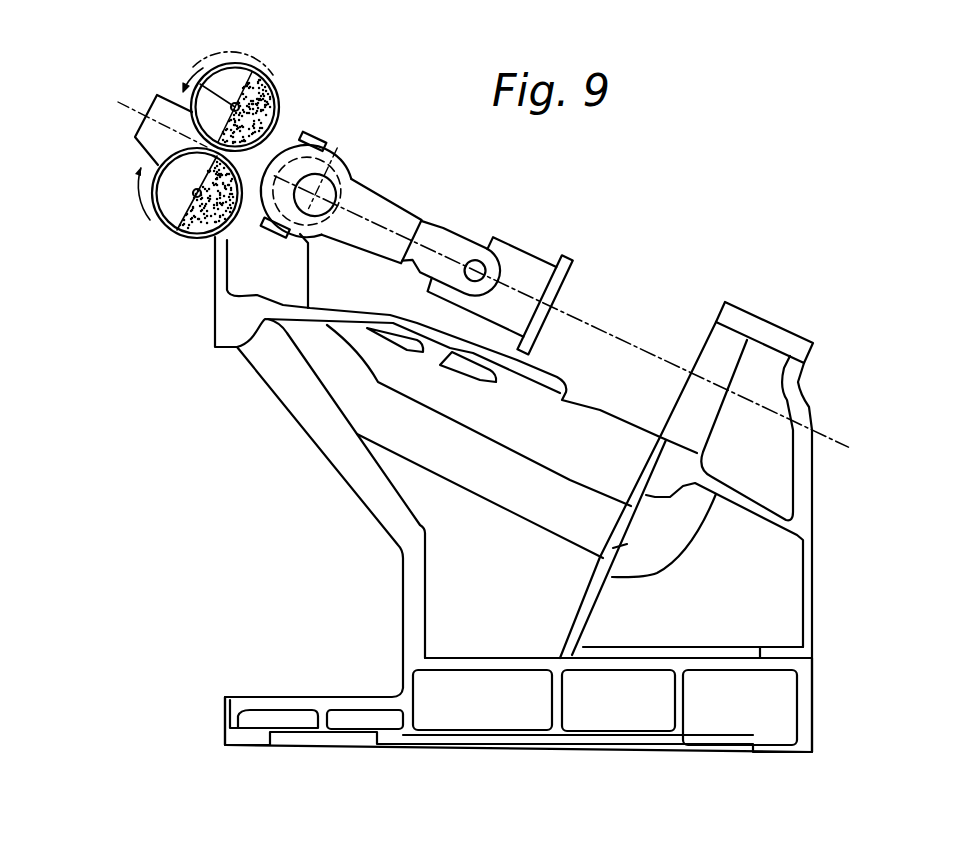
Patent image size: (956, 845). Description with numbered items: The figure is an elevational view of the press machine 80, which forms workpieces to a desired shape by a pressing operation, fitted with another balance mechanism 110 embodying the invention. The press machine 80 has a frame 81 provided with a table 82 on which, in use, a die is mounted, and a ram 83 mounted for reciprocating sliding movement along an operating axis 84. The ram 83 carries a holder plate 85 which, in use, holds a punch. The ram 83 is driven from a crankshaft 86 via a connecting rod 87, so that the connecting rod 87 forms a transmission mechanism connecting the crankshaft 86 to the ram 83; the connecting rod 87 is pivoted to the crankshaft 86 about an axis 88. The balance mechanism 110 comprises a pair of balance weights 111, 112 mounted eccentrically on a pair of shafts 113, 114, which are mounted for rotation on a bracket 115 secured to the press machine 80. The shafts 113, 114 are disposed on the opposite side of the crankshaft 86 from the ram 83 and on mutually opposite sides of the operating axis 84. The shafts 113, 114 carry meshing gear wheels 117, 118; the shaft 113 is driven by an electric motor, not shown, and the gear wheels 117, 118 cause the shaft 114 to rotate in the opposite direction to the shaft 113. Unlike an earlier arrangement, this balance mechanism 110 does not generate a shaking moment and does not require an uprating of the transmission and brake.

The press machine 80 is at (840, 714).
The frame 81 is at (807, 593).
The table 82 is at (707, 339).
The ram 83 is at (507, 262).
The operating axis 84 is at (829, 438).
The holder plate 85 is at (563, 255).
The crankshaft 86 is at (315, 193).
The connecting rod 87 is at (397, 220).
The axis 88 is at (287, 175).
The balance mechanism 110 is at (116, 168).
The balance weight 111 is at (203, 223).
The balance weight 112 is at (257, 85).
The shaft 113 is at (166, 226).
The shaft 114 is at (203, 68).
The bracket 115 is at (148, 133).
The gear wheel 117 is at (178, 228).
The gear wheel 118 is at (228, 68).